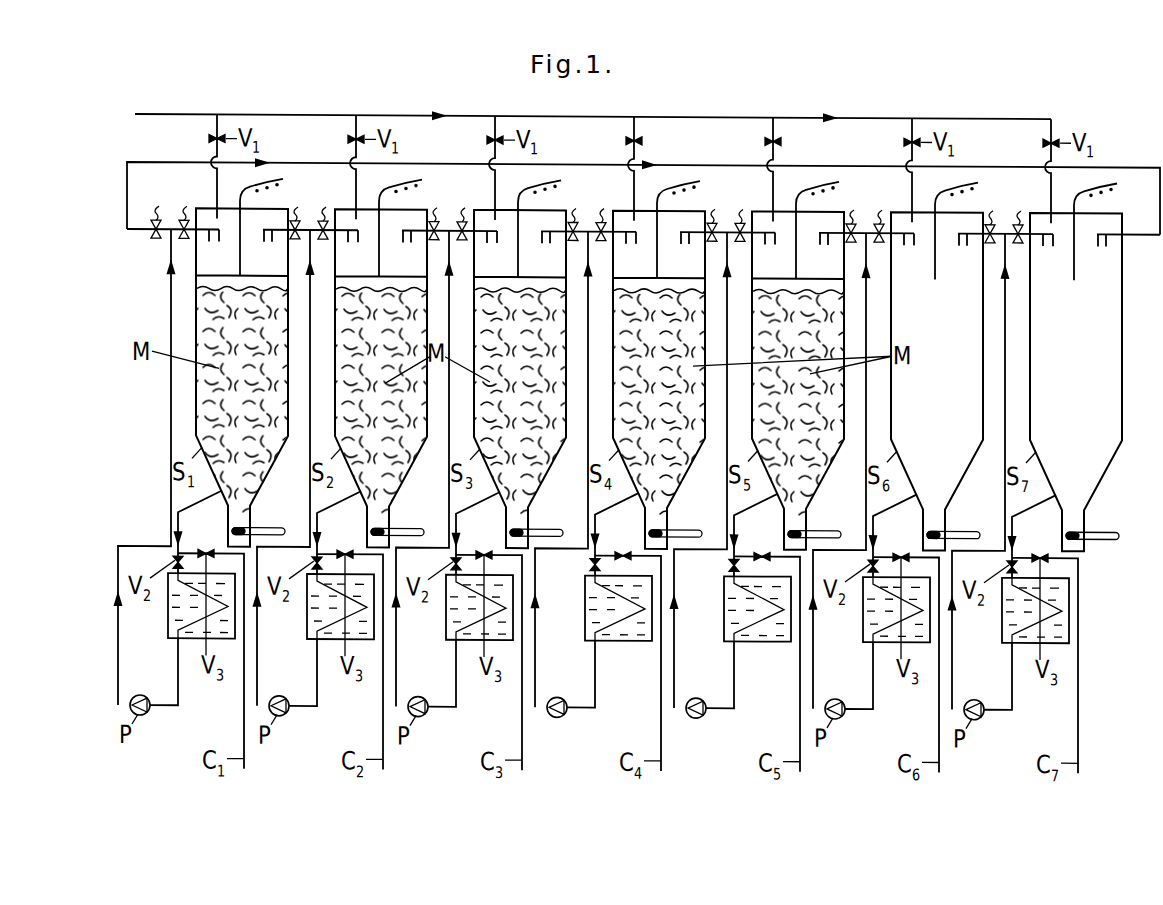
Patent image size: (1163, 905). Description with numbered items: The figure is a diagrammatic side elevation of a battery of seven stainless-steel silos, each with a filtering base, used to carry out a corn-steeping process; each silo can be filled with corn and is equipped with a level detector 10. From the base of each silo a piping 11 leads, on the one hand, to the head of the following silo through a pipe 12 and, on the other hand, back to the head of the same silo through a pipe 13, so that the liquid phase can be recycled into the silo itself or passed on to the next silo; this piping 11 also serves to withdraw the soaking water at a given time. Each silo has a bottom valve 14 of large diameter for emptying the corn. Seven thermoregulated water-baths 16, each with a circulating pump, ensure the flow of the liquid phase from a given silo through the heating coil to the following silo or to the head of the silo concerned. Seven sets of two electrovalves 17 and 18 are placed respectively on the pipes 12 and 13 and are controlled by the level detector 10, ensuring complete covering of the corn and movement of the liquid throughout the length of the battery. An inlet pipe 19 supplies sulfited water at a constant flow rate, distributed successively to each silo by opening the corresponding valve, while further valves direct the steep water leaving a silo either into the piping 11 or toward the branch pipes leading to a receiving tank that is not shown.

The level detector 10 is at (241, 241).
The piping 11 is at (186, 507).
The pipe 12 is at (135, 231).
The pipe 13 is at (209, 243).
The bottom valve 14 is at (250, 526).
The thermoregulated water-bath 16 is at (168, 628).
The electrovalve 17 is at (153, 212).
The electrovalve 18 is at (184, 212).
The inlet pipe 19 is at (178, 115).